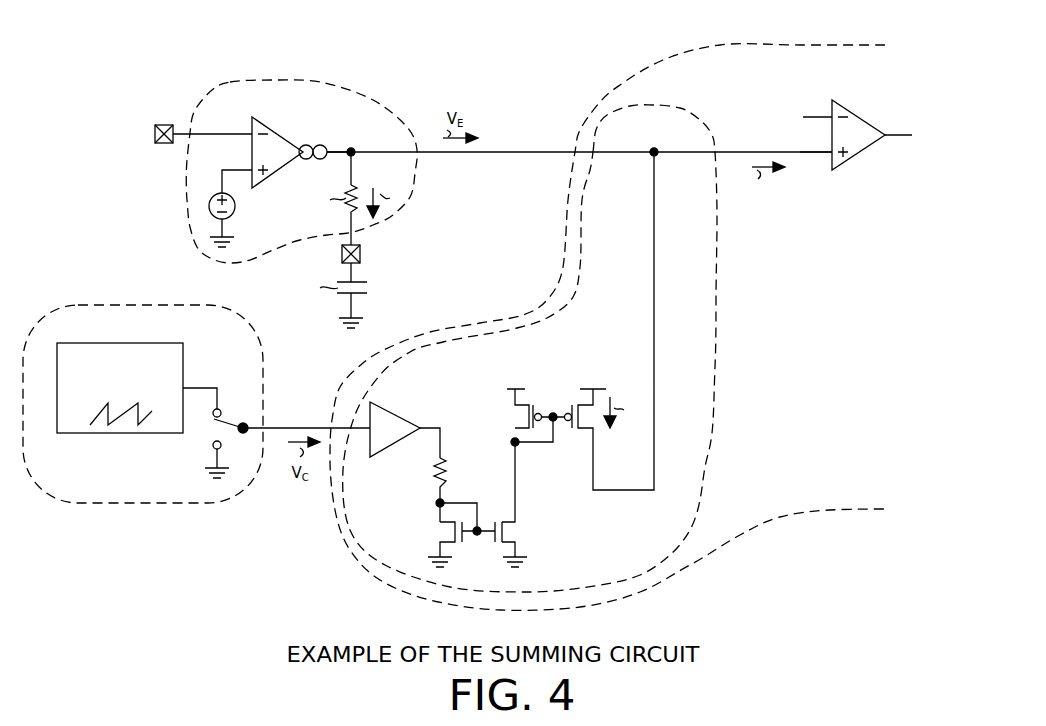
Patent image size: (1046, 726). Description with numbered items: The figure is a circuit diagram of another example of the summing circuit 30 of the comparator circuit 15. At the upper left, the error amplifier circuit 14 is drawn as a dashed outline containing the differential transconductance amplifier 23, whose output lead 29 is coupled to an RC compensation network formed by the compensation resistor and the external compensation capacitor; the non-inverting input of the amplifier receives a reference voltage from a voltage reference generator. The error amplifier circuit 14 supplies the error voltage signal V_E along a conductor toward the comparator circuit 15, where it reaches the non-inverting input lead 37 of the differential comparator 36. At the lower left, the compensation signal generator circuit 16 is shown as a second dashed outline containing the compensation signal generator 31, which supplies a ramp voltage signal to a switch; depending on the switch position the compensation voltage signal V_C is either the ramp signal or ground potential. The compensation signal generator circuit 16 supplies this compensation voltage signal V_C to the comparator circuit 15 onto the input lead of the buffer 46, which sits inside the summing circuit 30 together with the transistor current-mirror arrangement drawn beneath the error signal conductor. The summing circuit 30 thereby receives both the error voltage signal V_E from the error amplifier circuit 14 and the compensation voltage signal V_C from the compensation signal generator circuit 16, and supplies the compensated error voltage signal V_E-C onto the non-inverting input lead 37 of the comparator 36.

The error amplifier circuit 14 is at (295, 82).
The differential transconductance amplifier 23 is at (274, 132).
The output lead 29 is at (321, 146).
The comparator circuit 15 is at (598, 105).
The differential comparator 36 is at (852, 112).
The non-inverting input lead 37 is at (828, 154).
The compensation signal generator circuit 16 is at (177, 503).
The compensation signal generator 31 is at (118, 343).
The summing circuit 30 is at (716, 343).
The buffer 46 is at (392, 421).